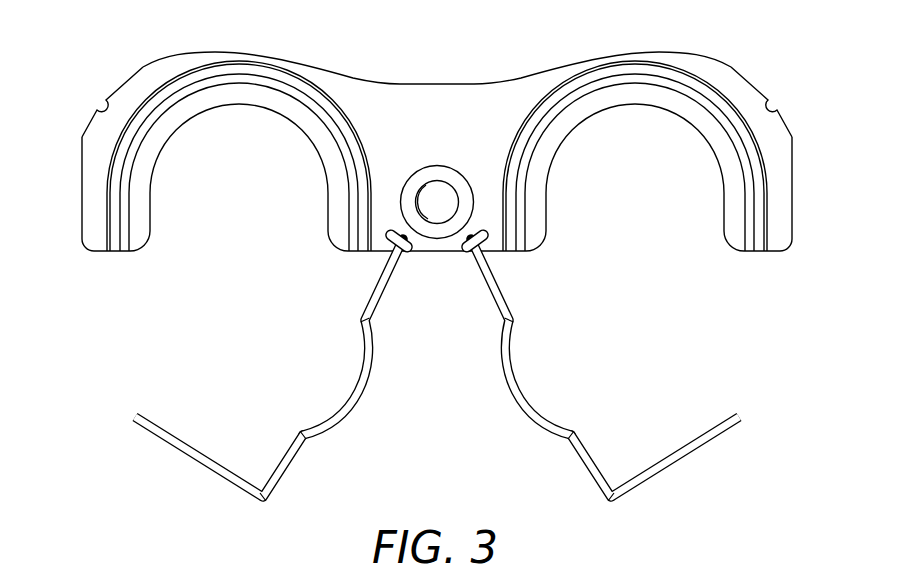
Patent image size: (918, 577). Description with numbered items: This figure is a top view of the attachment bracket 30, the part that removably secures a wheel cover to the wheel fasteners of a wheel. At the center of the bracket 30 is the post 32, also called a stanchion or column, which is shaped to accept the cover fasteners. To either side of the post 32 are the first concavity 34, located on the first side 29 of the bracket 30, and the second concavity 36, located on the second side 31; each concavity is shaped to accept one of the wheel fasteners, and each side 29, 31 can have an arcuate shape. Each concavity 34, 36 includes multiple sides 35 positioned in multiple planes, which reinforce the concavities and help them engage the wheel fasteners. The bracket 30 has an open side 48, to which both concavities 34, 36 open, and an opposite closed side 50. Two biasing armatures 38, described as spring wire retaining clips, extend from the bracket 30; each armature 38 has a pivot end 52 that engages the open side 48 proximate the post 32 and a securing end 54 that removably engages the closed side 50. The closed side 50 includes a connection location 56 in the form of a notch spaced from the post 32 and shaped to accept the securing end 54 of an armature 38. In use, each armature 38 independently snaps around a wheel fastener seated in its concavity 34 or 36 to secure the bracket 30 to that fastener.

The first side 29 is at (350, 62).
The attachment bracket 30 is at (123, 476).
The second side 31 is at (541, 63).
The post 32 is at (432, 166).
The first concavity 34 is at (224, 198).
The multiple sides 35 is at (263, 76).
The second concavity 36 is at (629, 198).
The biasing armature 38 is at (264, 498).
The open side 48 is at (436, 405).
The closed side 50 is at (483, 64).
The pivot end 52 is at (420, 263).
The securing end 54 is at (119, 404).
The connection location 56 is at (93, 93).